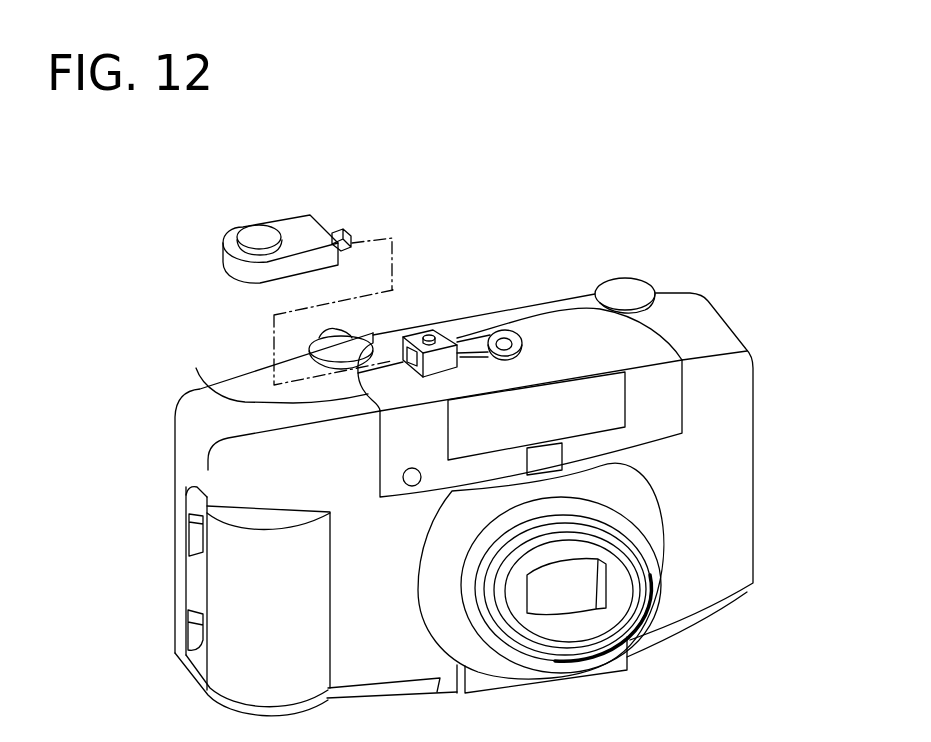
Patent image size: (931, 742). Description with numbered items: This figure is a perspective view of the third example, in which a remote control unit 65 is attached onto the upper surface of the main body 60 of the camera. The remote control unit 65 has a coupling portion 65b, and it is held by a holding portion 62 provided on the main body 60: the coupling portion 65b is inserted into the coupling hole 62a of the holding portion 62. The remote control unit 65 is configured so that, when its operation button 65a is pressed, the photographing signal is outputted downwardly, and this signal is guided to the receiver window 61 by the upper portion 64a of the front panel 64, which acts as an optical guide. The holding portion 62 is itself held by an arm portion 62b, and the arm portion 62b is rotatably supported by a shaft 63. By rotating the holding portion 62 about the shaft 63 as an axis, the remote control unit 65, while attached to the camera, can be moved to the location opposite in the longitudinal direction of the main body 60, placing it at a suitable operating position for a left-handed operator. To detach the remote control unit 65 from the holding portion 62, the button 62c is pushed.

The main body 60 is at (756, 450).
The receiver window 61 is at (404, 472).
The holding portion 62 is at (437, 334).
The coupling hole 62a is at (404, 334).
The arm portion 62b is at (513, 331).
The button 62c is at (481, 338).
The shaft 63 is at (508, 340).
The front panel 64 is at (672, 388).
The upper portion of the front panel 64a is at (196, 368).
The remote control unit 65 is at (295, 216).
The operation button 65a is at (254, 236).
The coupling portion 65b is at (351, 233).